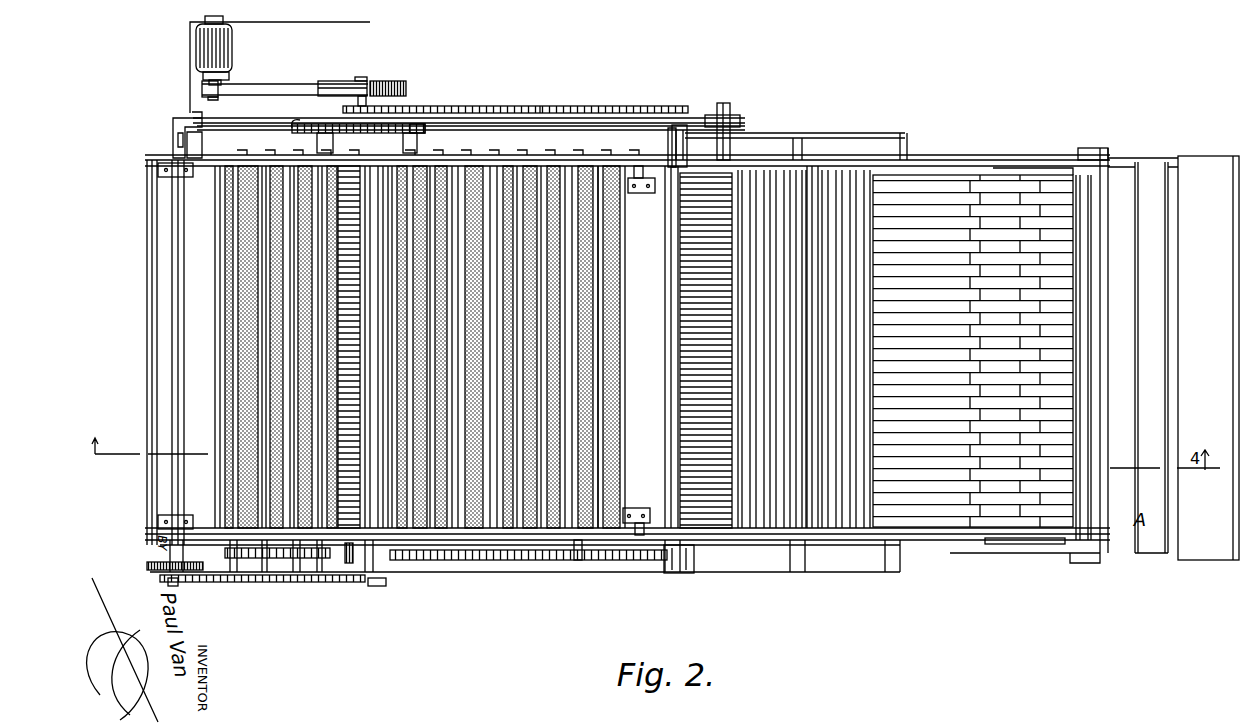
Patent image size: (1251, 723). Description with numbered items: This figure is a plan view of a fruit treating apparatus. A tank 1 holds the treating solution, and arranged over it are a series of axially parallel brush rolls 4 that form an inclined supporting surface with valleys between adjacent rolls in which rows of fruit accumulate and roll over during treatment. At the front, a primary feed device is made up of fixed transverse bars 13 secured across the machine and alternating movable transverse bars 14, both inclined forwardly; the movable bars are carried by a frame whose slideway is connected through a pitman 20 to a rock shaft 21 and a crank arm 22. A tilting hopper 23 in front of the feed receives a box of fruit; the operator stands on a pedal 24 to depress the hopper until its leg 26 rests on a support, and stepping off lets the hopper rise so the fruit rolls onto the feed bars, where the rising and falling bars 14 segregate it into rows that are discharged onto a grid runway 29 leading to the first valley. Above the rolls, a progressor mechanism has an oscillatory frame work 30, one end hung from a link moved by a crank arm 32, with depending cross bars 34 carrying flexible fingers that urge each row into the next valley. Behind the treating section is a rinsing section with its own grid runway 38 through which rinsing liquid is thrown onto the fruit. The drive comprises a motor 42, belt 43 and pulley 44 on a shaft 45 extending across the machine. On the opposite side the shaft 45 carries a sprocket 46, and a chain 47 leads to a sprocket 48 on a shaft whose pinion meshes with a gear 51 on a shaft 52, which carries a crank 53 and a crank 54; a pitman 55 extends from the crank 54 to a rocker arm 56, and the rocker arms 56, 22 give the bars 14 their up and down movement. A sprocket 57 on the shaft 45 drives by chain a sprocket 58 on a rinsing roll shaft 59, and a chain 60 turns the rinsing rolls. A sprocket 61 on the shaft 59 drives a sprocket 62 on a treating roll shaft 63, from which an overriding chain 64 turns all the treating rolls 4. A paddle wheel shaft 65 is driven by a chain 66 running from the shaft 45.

The tank 1 is at (150, 445).
The brush rolls 4 is at (583, 492).
The transverse bars 13 is at (755, 528).
The transverse bars 14 is at (732, 528).
The pitman 20 is at (832, 143).
The rock shaft 21 is at (613, 383).
The crank arm 22 is at (684, 125).
The tilting hopper 23 is at (978, 517).
The pedal 24 is at (1206, 358).
The leg 26 is at (1022, 540).
The grid runway 29 is at (597, 427).
The oscillatory frame work 30 is at (577, 533).
The crank arm 32 is at (650, 195).
The cross bars 34 is at (570, 440).
The grid runway 38 is at (345, 340).
The motor 42 is at (233, 50).
The belt 43 is at (290, 85).
The pulley 44 is at (340, 82).
The shaft 45 is at (377, 100).
The sprocket 46 is at (386, 582).
The chain 47 is at (278, 583).
The sprocket 48 is at (168, 585).
The gear 51 is at (146, 566).
The shaft 52 is at (183, 420).
The crank 53 is at (183, 178).
The crank 54 is at (172, 128).
The pitman 55 is at (500, 123).
The rocker arm 56 is at (668, 132).
The sprocket 57 is at (378, 117).
The sprocket 58 is at (300, 126).
The rinsing roll shaft 59 is at (317, 143).
The chain 60 is at (248, 560).
The sprocket 61 is at (294, 118).
The sprocket 62 is at (417, 128).
The treating roll shaft 63 is at (417, 143).
The chain 64 is at (505, 567).
The shaft 65 is at (732, 120).
The chain 66 is at (530, 106).